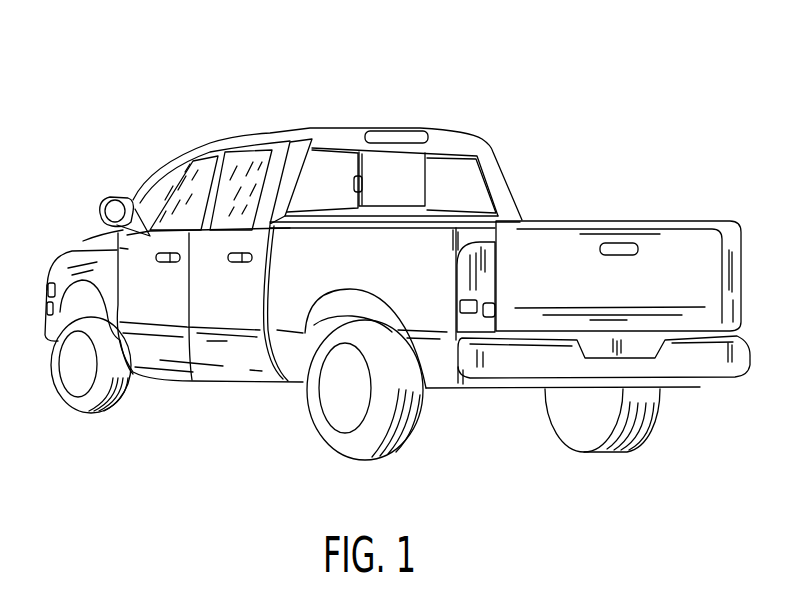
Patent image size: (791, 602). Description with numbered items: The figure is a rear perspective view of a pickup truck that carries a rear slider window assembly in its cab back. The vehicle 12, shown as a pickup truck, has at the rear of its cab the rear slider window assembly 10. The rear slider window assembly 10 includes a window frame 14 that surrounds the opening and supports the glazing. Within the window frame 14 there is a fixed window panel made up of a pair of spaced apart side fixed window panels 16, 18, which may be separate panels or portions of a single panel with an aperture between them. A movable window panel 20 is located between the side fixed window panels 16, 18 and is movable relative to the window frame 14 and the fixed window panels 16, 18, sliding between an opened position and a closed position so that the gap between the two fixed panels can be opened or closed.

The rear slider window assembly 10 is at (404, 179).
The vehicle 12 is at (397, 239).
The window frame 14 is at (318, 219).
The side fixed window panel 16 is at (340, 160).
The side fixed window panel 18 is at (478, 190).
The movable window panel 20 is at (405, 168).